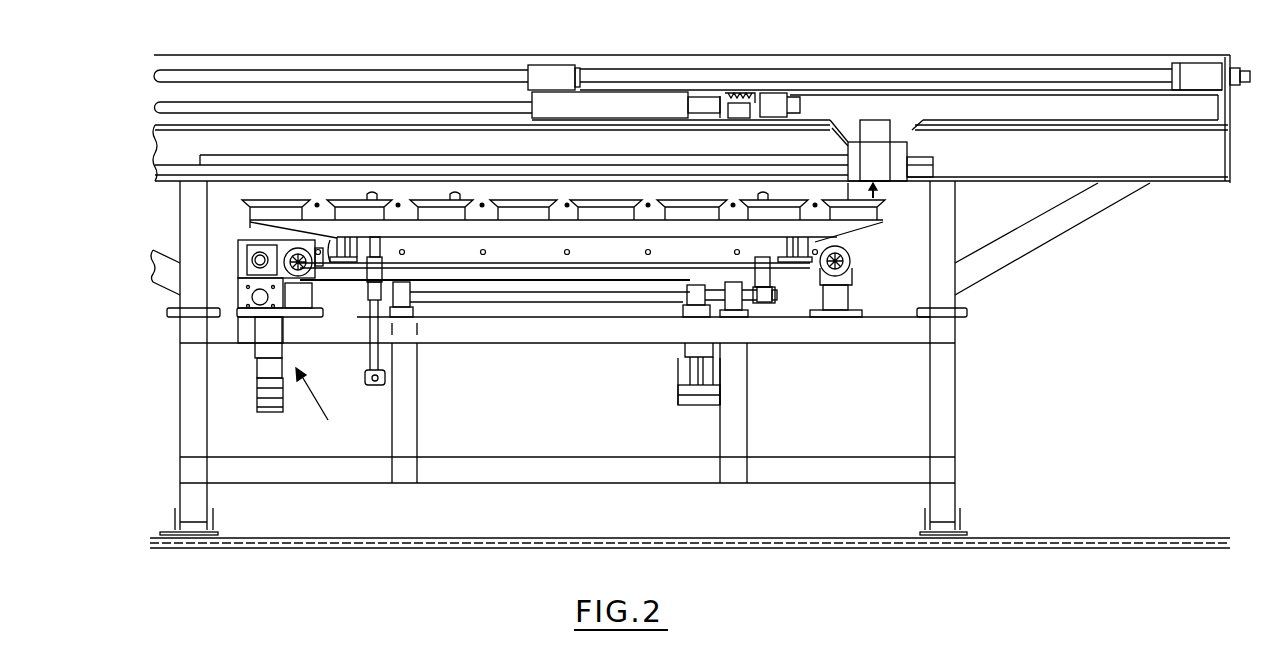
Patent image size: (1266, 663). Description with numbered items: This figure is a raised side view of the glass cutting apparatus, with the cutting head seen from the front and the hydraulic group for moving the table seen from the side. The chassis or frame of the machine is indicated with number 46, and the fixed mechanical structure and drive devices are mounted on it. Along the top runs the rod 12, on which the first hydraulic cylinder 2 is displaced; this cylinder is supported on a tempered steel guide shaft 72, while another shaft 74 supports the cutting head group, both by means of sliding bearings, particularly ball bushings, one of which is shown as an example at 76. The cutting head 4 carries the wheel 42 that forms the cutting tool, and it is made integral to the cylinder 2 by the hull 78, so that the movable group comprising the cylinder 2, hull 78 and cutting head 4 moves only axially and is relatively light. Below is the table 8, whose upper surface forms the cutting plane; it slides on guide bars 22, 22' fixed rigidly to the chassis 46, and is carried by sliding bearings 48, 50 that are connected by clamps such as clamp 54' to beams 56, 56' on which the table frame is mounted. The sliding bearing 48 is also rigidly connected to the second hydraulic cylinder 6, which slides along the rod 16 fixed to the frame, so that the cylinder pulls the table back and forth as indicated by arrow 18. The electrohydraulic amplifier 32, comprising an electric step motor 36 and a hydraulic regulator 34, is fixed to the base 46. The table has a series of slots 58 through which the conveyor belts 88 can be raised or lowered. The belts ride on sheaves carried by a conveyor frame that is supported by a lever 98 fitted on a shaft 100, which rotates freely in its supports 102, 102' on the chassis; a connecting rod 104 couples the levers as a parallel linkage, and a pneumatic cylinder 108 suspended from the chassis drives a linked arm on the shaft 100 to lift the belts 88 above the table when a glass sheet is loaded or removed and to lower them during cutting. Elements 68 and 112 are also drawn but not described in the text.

The first hydraulic cylinder 2 is at (842, 78).
The cutting head 4 is at (883, 167).
The second hydraulic cylinder 6 is at (245, 265).
The table 8 is at (835, 229).
The rod 12 is at (415, 70).
The rod 16 is at (257, 257).
The arrow 18 is at (1236, 70).
The guide bar 22 is at (329, 283).
The guide bar 22' is at (855, 293).
The electrohydraulic amplifier 32 is at (321, 404).
The hydraulic regulator 34 is at (268, 345).
The electric step motor 36 is at (278, 410).
The wheel 42 is at (875, 186).
The chassis 46 is at (412, 397).
The sliding bearing 48 is at (320, 255).
The sliding bearing 50 is at (850, 258).
The clamp 54' is at (782, 282).
The beam 56 is at (363, 242).
The beam 56' is at (844, 253).
The slots 58 is at (317, 200).
The brace 68 is at (947, 222).
The guide shaft 72 is at (769, 97).
The shaft 74 is at (663, 160).
The sliding bearing 76 is at (742, 115).
The hull 78 is at (918, 130).
The belts 88 is at (572, 252).
The lever 98 is at (366, 350).
The shaft 100 is at (548, 297).
The support 102 is at (466, 341).
The support 102' is at (761, 341).
The connecting rod 104 is at (376, 388).
The pneumatic cylinder 108 is at (685, 352).
The coupling 112 is at (697, 313).